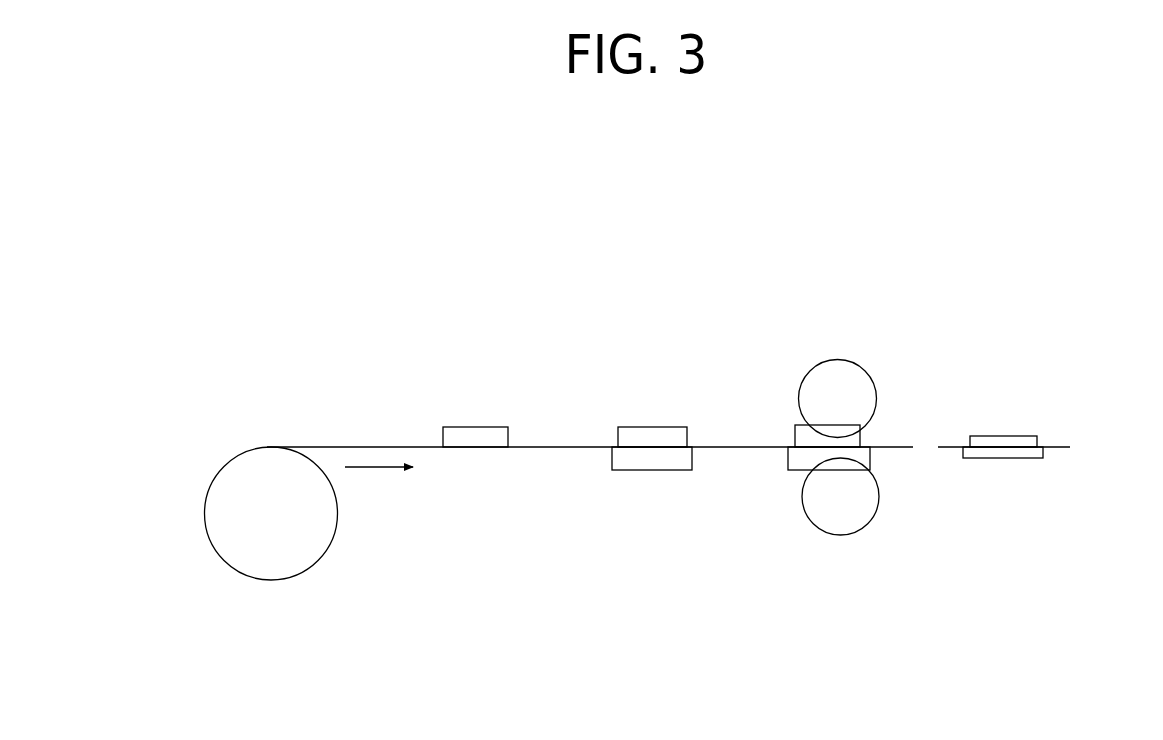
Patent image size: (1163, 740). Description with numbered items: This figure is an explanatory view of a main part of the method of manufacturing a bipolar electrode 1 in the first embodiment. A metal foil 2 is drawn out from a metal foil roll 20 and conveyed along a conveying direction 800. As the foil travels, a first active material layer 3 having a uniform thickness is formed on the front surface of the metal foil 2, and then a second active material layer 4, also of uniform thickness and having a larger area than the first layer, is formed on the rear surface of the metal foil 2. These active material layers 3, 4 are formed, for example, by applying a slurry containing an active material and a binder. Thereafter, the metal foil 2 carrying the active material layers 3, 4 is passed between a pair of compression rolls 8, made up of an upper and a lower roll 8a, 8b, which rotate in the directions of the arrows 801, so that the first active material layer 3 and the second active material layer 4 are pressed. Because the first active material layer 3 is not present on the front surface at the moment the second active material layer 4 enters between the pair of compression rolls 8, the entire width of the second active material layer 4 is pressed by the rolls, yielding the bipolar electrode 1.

The bipolar electrode 1 is at (1069, 386).
The metal foil 2 is at (382, 446).
The first active material layer 3 is at (478, 438).
The second active material layer 4 is at (652, 462).
The pair of compression rolls 8 is at (864, 461).
The compression roll 8a is at (840, 397).
The compression roll 8b is at (840, 520).
The metal foil roll 20 is at (278, 530).
The conveying direction 800 is at (375, 473).
The arrows 801 is at (786, 409).